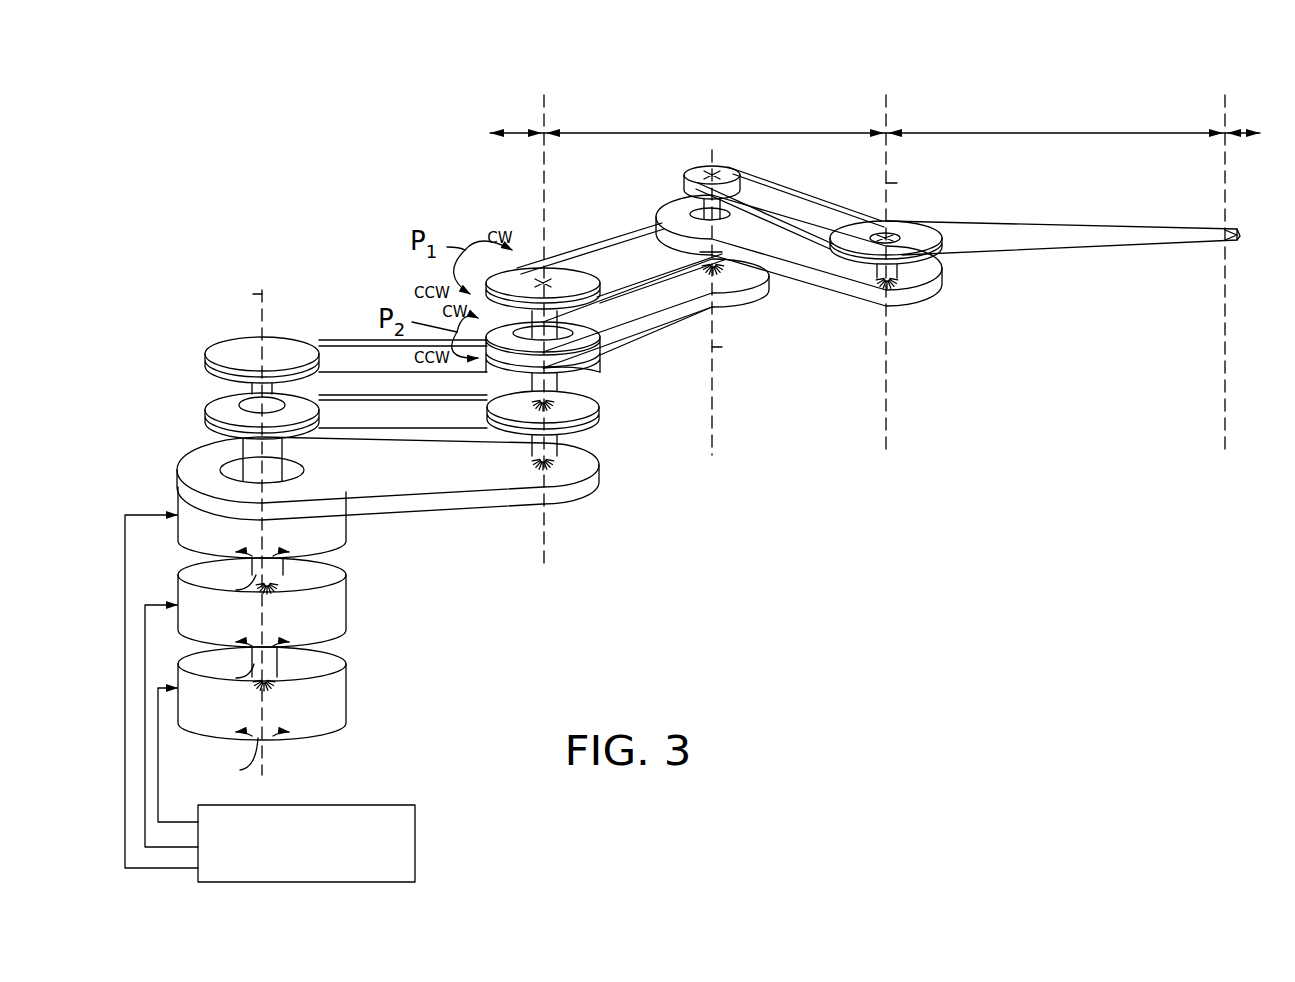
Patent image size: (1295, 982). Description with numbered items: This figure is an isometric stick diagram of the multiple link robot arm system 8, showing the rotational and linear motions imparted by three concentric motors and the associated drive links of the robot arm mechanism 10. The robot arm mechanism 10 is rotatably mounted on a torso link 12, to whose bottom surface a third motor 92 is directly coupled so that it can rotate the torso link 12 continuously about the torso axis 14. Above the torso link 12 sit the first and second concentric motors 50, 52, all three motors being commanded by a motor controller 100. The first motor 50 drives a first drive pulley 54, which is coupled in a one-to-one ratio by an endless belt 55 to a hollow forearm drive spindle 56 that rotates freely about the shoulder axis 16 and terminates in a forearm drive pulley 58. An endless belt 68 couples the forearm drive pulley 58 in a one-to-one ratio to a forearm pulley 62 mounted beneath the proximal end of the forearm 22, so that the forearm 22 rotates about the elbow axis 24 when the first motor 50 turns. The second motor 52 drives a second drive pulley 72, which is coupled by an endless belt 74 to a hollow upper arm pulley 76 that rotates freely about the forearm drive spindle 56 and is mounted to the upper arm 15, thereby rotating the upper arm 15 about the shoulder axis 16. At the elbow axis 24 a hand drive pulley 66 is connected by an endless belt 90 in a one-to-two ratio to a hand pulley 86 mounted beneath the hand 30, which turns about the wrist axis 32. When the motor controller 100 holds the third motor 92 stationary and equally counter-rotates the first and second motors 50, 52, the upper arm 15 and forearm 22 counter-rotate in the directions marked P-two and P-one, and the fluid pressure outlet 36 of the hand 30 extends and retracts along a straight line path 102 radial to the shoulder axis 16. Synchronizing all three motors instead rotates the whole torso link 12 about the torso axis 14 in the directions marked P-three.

The multiple link robot arm system 8 is at (697, 601).
The robot arm mechanism 10 is at (1023, 441).
The torso link 12 is at (425, 478).
The torso axis 14 is at (255, 294).
The upper arm 15 is at (635, 310).
The shoulder axis 16 is at (540, 175).
The forearm 22 is at (813, 262).
The elbow axis 24 is at (716, 347).
The hand 30 is at (1035, 232).
The wrist axis 32 is at (898, 182).
The fluid pressure outlet 36 is at (1230, 228).
The first motor 50 is at (345, 600).
The second motor 52 is at (345, 690).
The first drive pulley 54 is at (220, 408).
The endless belt 55 is at (395, 432).
The hollow forearm drive spindle 56 is at (580, 403).
The forearm drive pulley 58 is at (572, 272).
The forearm pulley 62 is at (633, 277).
The hand drive pulley 66 is at (705, 168).
The endless belt 68 is at (632, 273).
The second drive pulley 72 is at (230, 345).
The endless belt 74 is at (373, 370).
The hollow upper arm pulley 76 is at (600, 374).
The hand pulley 86 is at (940, 258).
The endless belt 90 is at (828, 205).
The third motor 92 is at (343, 520).
The motor controller 100 is at (417, 833).
The straight line path 102 is at (1055, 133).